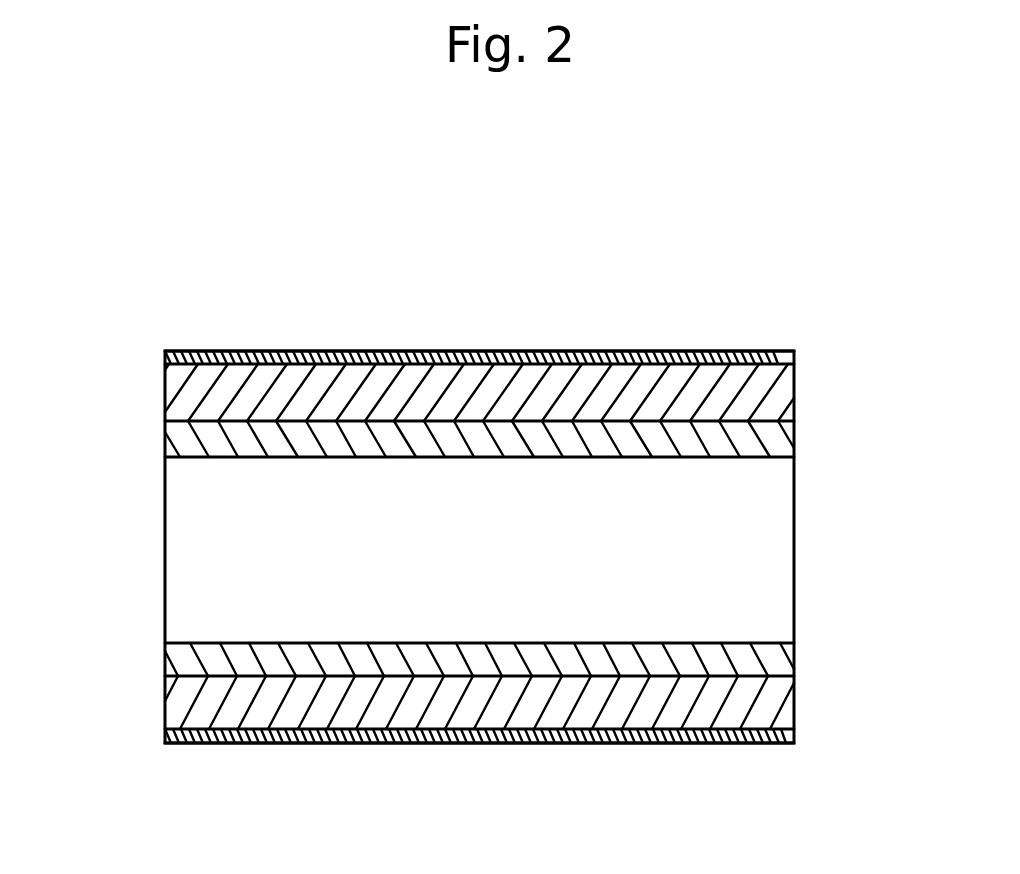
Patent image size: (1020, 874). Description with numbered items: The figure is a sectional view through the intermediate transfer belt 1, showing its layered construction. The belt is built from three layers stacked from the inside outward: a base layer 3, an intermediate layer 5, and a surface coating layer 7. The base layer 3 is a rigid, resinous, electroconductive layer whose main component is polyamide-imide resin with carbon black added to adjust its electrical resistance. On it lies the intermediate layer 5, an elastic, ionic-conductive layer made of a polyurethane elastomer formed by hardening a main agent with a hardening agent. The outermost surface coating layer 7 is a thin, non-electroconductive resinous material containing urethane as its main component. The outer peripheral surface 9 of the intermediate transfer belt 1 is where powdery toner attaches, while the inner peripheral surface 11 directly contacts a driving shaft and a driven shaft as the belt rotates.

The intermediate transfer belt 1 is at (755, 253).
The base layer 3 is at (760, 447).
The intermediate layer 5 is at (758, 408).
The surface coating layer 7 is at (794, 356).
The peripheral surface 9 is at (326, 351).
The inner peripheral surface 11 is at (258, 457).